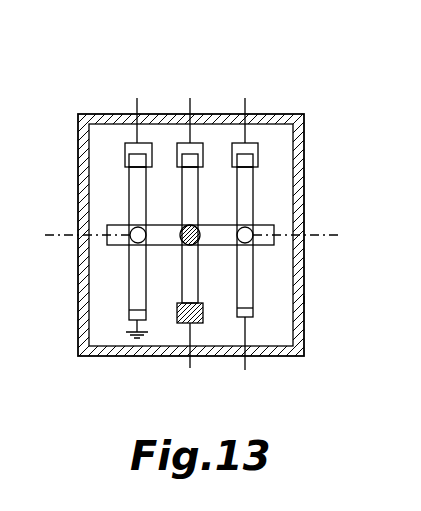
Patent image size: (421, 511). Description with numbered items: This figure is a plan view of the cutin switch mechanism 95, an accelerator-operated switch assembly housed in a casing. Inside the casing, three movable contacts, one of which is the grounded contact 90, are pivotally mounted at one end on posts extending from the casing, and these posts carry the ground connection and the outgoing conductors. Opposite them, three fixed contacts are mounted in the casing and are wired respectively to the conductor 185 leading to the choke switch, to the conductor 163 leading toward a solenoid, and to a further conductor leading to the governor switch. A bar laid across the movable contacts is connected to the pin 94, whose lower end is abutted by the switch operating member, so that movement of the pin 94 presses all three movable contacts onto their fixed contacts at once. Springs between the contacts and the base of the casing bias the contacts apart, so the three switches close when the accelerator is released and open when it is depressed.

The movable contact 90 is at (132, 181).
The pin 94 is at (178, 245).
The cutin switch mechanism 95 is at (304, 300).
The conductor 163 is at (190, 98).
The conductor 185 is at (246, 98).